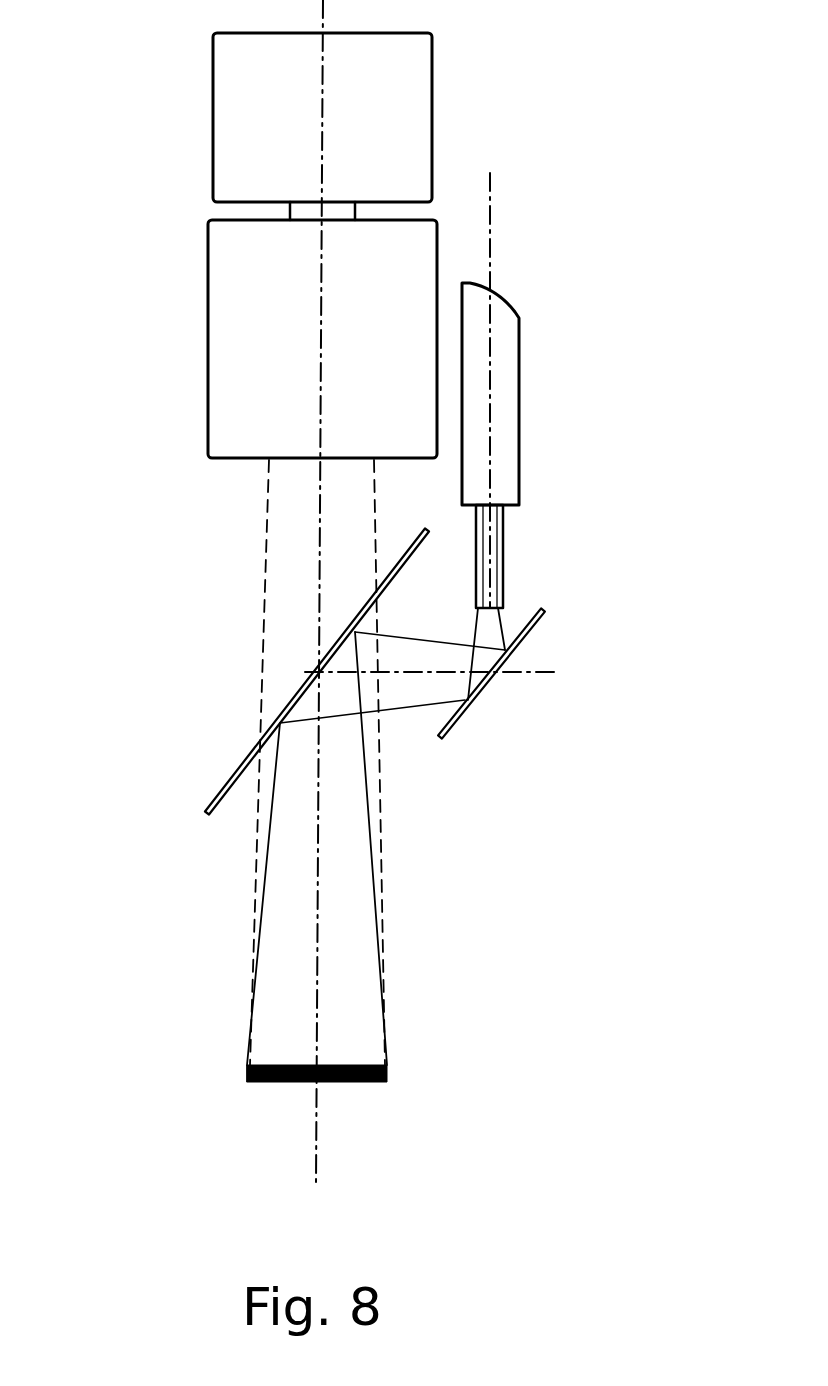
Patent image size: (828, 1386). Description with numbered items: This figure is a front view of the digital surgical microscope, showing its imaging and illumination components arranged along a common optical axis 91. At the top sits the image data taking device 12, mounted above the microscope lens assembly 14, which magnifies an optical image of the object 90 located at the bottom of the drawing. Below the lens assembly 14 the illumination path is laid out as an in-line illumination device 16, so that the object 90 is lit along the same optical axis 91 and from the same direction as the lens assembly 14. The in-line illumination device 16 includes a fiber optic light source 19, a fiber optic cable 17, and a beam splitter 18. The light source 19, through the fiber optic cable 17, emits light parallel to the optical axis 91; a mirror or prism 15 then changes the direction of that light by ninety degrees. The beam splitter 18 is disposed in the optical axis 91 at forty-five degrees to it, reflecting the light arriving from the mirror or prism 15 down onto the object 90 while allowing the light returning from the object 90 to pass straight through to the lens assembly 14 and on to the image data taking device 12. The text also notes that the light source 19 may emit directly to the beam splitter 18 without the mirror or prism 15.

The image data taking device 12 is at (213, 92).
The microscope lens assembly 14 is at (208, 313).
The mirror or prism 15 is at (442, 740).
The in-line illumination device 16 is at (545, 545).
The fiber optic cable 17 is at (503, 530).
The beam splitter 18 is at (205, 810).
The fiber optic light source 19 is at (520, 355).
The object 90 is at (387, 1072).
The optical axis 91 is at (318, 1162).